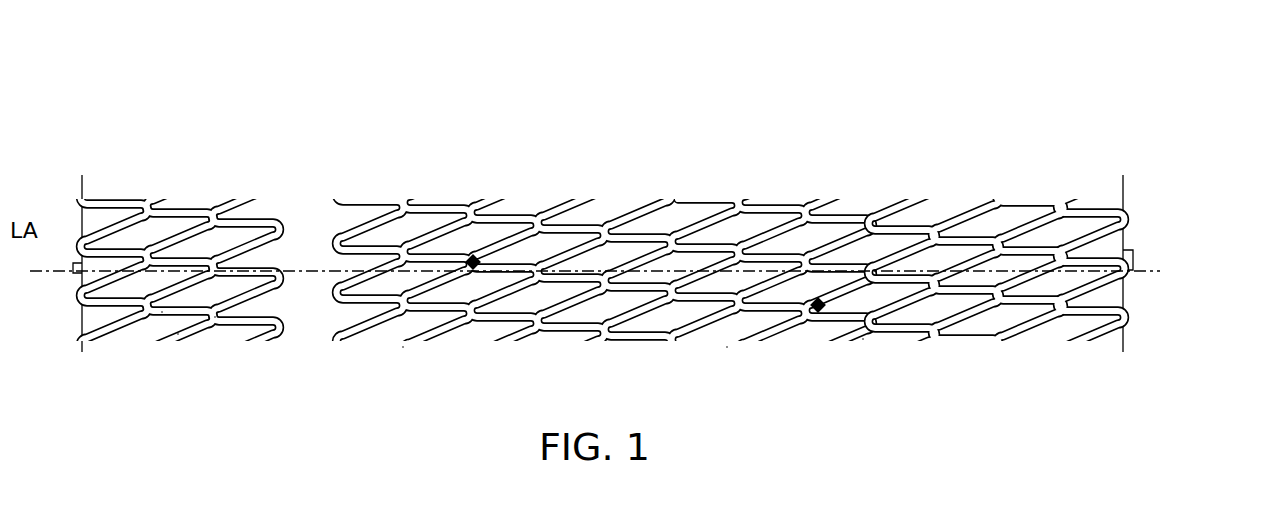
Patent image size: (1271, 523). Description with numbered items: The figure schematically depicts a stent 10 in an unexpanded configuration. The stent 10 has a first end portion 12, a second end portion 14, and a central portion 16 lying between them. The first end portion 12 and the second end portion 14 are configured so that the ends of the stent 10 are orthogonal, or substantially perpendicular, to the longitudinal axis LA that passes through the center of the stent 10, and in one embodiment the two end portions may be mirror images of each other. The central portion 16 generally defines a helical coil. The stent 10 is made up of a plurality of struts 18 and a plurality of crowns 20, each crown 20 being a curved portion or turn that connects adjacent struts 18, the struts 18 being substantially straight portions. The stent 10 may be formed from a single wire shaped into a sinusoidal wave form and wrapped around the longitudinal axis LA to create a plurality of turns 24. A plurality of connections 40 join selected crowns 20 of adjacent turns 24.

The stent 10 is at (100, 125).
The first end portion 12 is at (328, 190).
The second end portion 14 is at (1122, 190).
The central portion 16 is at (840, 190).
The struts 18 is at (162, 313).
The crowns 20 is at (215, 318).
The turns 24 is at (403, 348).
The connections 40 is at (473, 264).